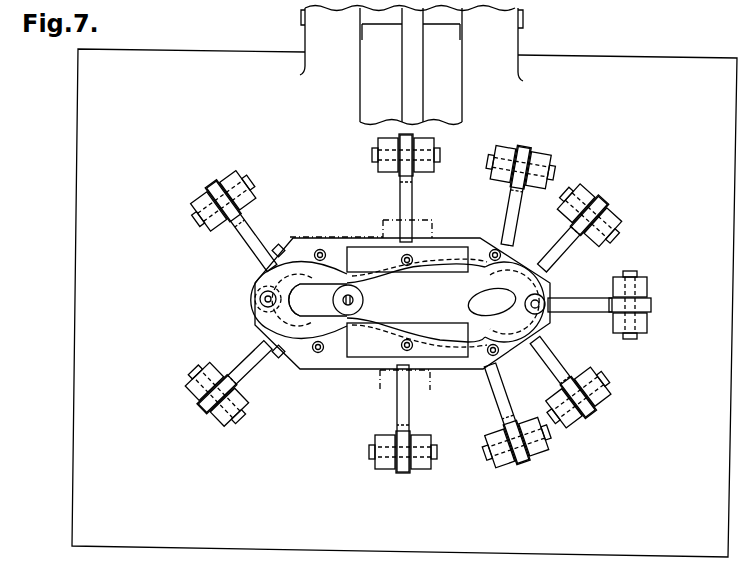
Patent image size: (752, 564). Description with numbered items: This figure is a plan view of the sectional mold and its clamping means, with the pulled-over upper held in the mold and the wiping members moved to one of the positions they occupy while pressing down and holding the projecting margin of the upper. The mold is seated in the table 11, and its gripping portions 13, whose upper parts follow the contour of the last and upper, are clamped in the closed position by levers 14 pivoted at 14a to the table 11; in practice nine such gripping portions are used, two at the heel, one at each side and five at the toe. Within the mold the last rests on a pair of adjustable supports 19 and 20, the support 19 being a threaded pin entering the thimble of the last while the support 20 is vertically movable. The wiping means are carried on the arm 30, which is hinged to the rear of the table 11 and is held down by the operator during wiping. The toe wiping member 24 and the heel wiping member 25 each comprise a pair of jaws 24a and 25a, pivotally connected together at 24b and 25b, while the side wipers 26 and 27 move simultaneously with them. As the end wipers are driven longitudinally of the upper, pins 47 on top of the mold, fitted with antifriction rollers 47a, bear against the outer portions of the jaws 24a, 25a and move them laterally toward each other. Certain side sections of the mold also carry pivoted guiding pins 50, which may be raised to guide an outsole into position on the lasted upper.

The table 11 is at (404, 303).
The gripping portions 13 is at (444, 247).
The levers 14 is at (515, 228).
The lever pivot 14a is at (550, 182).
The adjustable support 19 is at (364, 301).
The adjustable support 20 is at (478, 306).
The toe wiping member 24 is at (553, 290).
The jaws of toe wiping member 24a is at (481, 298).
The pivot of toe wiper jaws 24b is at (612, 328).
The heel wiping member 25 is at (258, 299).
The jaws of heel wiping member 25a is at (312, 290).
The pivot of heel wiper jaws 25b is at (258, 305).
The side wiper 26 is at (407, 259).
The side wiper 27 is at (407, 340).
The arm 30 is at (411, 65).
The pins 47 is at (320, 250).
The antifriction rollers 47a is at (324, 252).
The guiding pins 50 is at (395, 276).